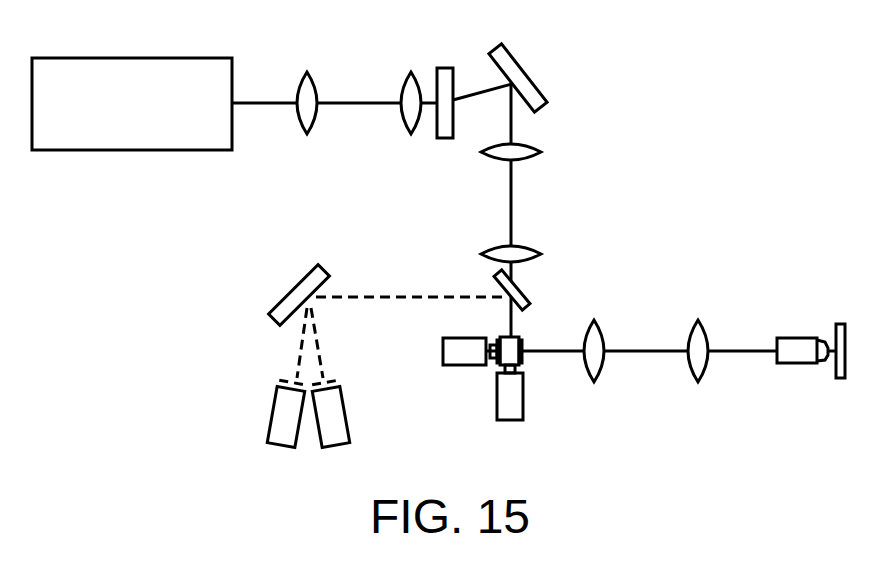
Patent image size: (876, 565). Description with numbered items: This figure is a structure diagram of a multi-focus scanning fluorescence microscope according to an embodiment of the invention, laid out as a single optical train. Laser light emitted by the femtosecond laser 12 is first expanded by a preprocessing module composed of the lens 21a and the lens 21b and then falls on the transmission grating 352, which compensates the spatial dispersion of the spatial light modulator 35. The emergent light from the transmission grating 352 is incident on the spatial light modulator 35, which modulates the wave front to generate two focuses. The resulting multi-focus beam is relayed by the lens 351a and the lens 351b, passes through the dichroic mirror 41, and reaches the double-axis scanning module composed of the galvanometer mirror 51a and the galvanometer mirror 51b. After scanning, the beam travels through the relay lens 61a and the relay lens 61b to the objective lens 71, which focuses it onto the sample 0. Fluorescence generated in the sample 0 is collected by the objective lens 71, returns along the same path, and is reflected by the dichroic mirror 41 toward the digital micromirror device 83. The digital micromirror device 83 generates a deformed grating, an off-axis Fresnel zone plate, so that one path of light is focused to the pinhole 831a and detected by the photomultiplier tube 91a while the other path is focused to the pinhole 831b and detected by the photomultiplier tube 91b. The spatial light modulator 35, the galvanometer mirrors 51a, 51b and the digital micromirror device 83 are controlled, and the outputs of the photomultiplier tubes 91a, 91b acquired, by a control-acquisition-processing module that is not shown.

The laser light source 12 is at (134, 58).
The lens 21a is at (307, 72).
The lens 21b is at (409, 72).
The transmission grating 352 is at (441, 68).
The spatial light modulator 35 is at (525, 70).
The lens 351a is at (543, 153).
The lens 351b is at (543, 254).
The dichroic mirror 41 is at (531, 305).
The digital micromirror device 83 is at (297, 282).
The pinhole 831a is at (283, 383).
The pinhole 831b is at (334, 383).
The photomultiplier tube 91a is at (270, 406).
The photomultiplier tube 91b is at (348, 406).
The galvanometer mirror 51a is at (443, 358).
The galvanometer mirror 51b is at (497, 410).
The relay lens 61a is at (590, 383).
The relay lens 61b is at (694, 383).
The objective lens 71 is at (788, 365).
The sample 0 is at (840, 380).